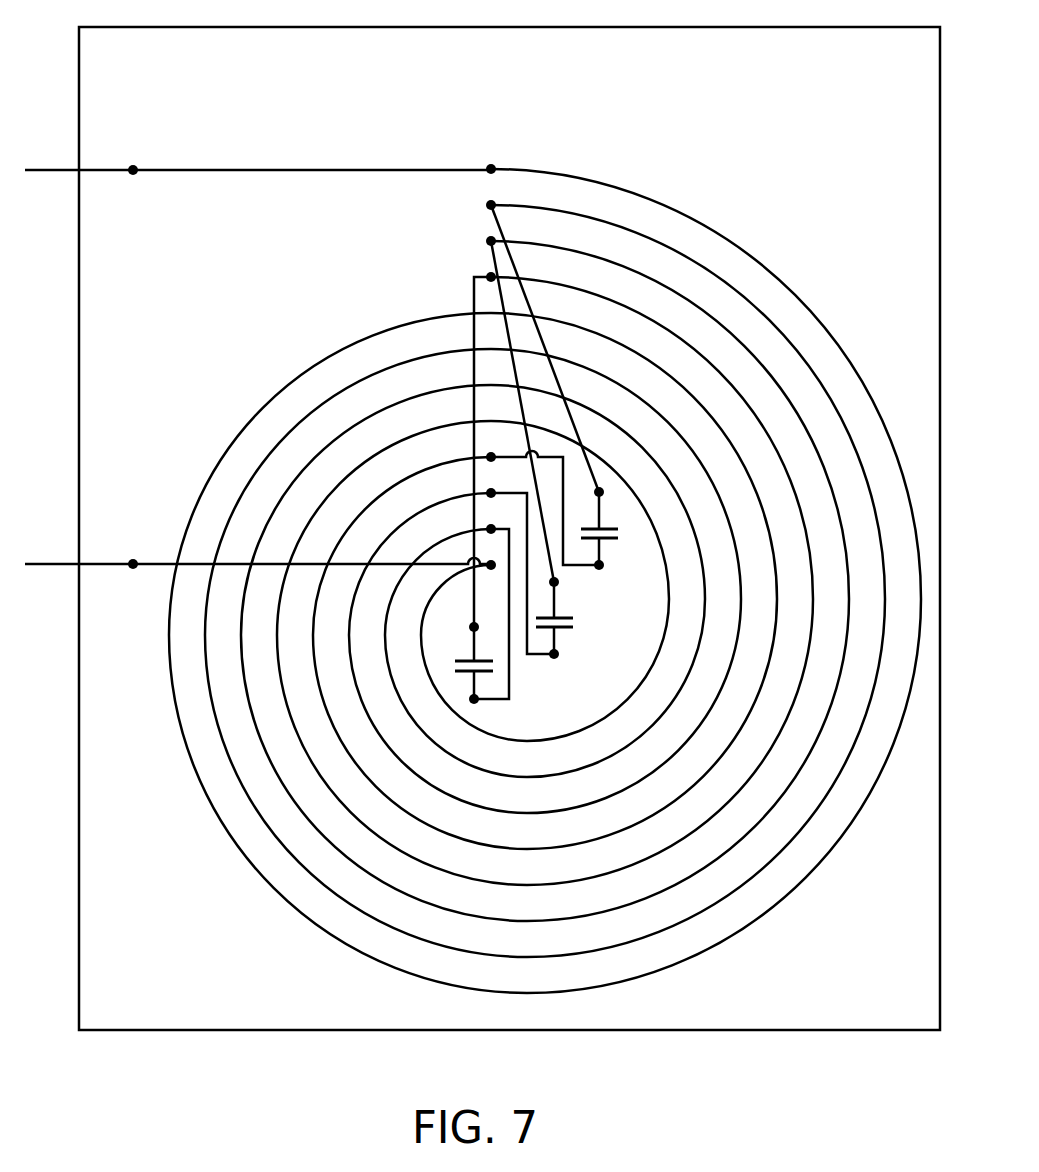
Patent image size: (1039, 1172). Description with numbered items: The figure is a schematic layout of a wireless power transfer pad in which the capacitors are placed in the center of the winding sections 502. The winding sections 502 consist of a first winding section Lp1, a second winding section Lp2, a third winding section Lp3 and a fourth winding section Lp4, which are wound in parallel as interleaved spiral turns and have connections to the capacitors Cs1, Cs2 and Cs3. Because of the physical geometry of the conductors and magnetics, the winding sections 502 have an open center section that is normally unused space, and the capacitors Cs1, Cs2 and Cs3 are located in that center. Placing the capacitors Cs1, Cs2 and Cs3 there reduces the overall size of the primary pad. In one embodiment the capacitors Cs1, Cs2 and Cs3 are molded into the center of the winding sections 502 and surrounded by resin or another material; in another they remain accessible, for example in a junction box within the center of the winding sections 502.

The winding sections 502 is at (545, 513).
The first winding section Lp1 is at (545, 563).
The second winding section Lp2 is at (545, 567).
The third winding section Lp3 is at (545, 569).
The fourth winding section Lp4 is at (545, 573).
The capacitor Cs1 is at (572, 387).
The capacitor Cs2 is at (552, 450).
The capacitor Cs3 is at (468, 490).